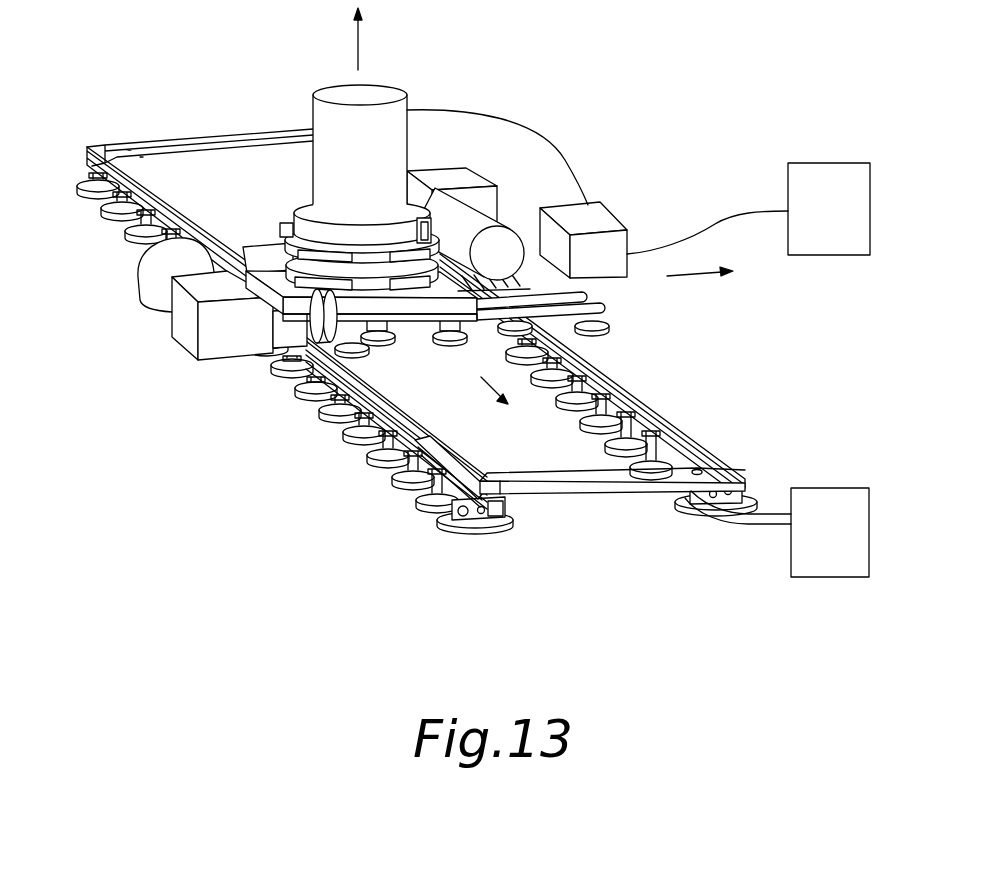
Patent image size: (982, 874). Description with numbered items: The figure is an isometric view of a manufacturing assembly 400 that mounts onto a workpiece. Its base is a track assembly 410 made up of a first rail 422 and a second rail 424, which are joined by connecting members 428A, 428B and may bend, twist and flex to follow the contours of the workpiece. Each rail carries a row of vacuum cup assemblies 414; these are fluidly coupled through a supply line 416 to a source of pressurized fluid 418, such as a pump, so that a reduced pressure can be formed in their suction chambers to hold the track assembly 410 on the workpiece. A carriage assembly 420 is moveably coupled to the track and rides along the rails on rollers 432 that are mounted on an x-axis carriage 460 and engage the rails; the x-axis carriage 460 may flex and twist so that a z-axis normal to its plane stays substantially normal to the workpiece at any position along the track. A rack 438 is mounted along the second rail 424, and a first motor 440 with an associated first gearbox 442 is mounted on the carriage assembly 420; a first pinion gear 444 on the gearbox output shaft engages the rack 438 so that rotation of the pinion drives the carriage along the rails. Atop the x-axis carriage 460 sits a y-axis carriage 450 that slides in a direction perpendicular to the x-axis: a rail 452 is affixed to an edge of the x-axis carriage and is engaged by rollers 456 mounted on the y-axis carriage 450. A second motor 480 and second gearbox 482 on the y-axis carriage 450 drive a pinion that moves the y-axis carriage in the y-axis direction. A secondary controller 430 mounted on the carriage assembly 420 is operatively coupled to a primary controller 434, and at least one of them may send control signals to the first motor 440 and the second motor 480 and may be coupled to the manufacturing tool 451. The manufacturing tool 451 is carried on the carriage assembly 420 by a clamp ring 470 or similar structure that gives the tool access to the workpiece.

The manufacturing assembly 400 is at (456, 292).
The track assembly 410 is at (400, 276).
The vacuum cup assemblies 414 is at (640, 440).
The supply line 416 is at (752, 522).
The source of pressurized fluid 418 is at (854, 545).
The carriage assembly 420 is at (385, 250).
The first rail 422 is at (645, 394).
The second rail 424 is at (421, 427).
The connecting member 428A is at (612, 487).
The connecting member 428B is at (232, 137).
The secondary controller 430 is at (603, 214).
The rollers 432 is at (746, 212).
The primary controller 434 is at (848, 221).
The rack 438 is at (444, 450).
The first motor 440 is at (152, 289).
The first gearbox 442 is at (188, 341).
The first pinion gear 444 is at (333, 328).
The y-axis carriage 450 is at (258, 244).
The manufacturing tool 451 is at (404, 72).
The rail 452 is at (596, 304).
The rollers 456 is at (410, 324).
The x-axis carriage 460 is at (597, 289).
The clamp ring 470 is at (296, 193).
The second motor 480 is at (487, 218).
The second gearbox 482 is at (466, 168).